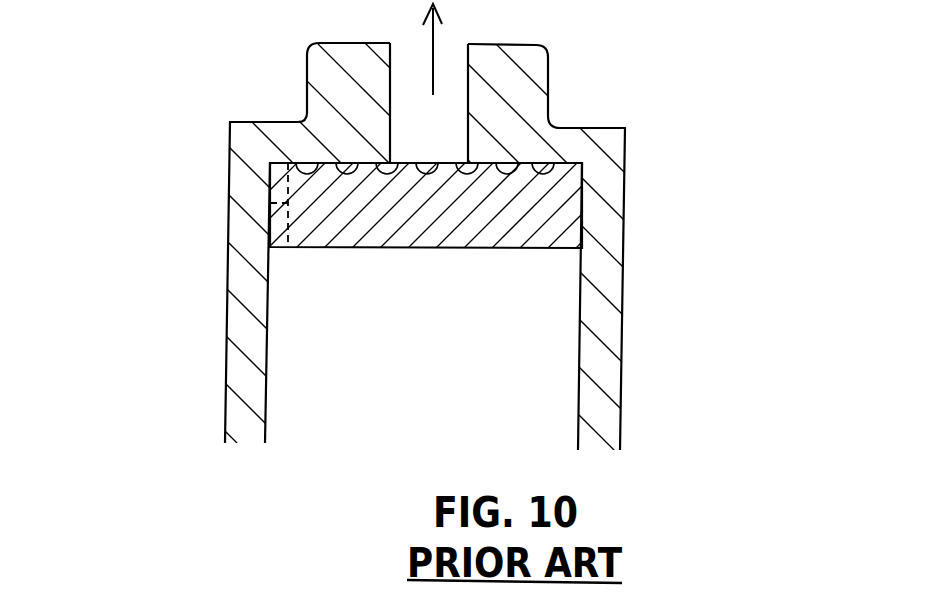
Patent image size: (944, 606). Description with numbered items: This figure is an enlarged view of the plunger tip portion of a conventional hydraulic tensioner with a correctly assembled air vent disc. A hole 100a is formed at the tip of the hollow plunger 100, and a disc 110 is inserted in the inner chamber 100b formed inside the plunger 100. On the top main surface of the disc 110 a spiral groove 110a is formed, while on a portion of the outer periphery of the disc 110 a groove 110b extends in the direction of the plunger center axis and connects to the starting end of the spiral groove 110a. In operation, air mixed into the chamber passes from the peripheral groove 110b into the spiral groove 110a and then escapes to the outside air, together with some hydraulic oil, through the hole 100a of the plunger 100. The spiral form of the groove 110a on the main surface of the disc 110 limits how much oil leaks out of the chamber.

The plunger 100 is at (602, 330).
The hole 100a is at (470, 78).
The inner chamber 100b is at (264, 354).
The disc 110 is at (558, 221).
The spiral groove 110a is at (548, 165).
The groove 110b is at (272, 203).